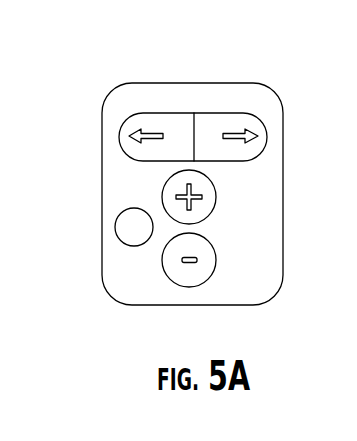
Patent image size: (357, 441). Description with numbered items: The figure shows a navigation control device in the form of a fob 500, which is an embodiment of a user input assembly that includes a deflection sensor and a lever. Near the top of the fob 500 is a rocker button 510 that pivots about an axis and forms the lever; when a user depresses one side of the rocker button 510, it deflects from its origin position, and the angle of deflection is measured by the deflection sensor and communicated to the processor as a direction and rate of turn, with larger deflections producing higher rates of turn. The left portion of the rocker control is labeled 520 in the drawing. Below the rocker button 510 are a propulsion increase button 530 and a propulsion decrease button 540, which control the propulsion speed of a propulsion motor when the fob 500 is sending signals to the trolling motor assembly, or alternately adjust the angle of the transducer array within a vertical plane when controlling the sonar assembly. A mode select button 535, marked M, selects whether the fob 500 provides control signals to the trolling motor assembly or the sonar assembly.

The fob 500 is at (235, 57).
The rocker button 510 is at (233, 113).
The left direction button 520 is at (194, 113).
The propulsion increase button 530 is at (216, 196).
The propulsion decrease button 540 is at (216, 258).
The mode select button 535 is at (116, 232).